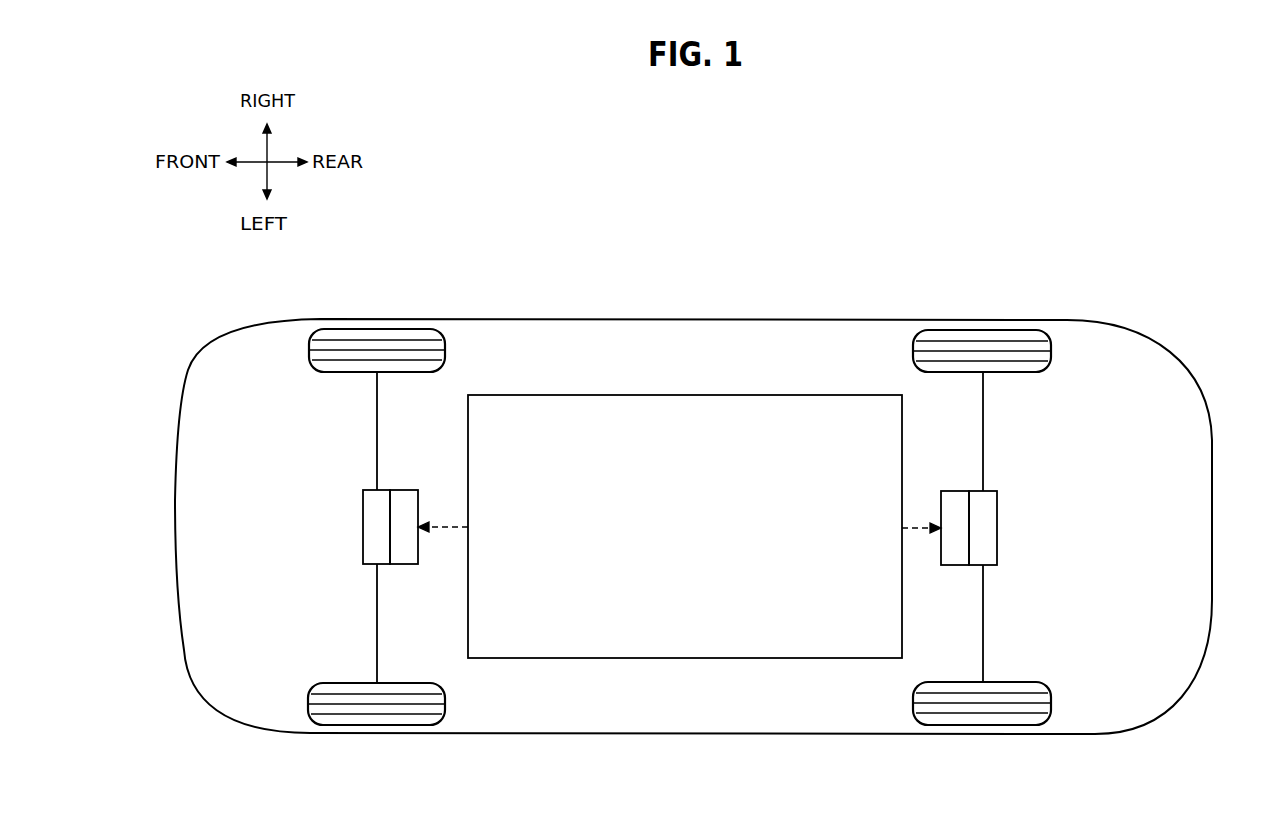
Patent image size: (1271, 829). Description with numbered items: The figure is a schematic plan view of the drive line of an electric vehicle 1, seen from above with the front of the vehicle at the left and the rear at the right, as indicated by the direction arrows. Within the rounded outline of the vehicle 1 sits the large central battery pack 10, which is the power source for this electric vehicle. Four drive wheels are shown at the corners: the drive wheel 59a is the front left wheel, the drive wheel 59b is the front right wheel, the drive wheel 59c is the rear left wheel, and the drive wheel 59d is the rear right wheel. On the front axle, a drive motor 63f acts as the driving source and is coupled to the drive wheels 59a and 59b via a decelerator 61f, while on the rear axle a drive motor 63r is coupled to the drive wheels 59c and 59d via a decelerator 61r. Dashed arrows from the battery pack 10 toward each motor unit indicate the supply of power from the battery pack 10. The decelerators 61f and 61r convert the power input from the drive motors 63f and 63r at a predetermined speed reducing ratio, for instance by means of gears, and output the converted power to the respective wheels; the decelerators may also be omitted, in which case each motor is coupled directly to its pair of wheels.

The vehicle 1 is at (1031, 152).
The battery pack 10 is at (693, 428).
The drive wheel 59a is at (377, 726).
The drive wheel 59b is at (377, 328).
The drive wheel 59c is at (983, 726).
The drive wheel 59d is at (983, 329).
The decelerator 61f is at (362, 527).
The decelerator 61r is at (998, 528).
The drive motor 63f is at (405, 489).
The drive motor 63r is at (945, 490).